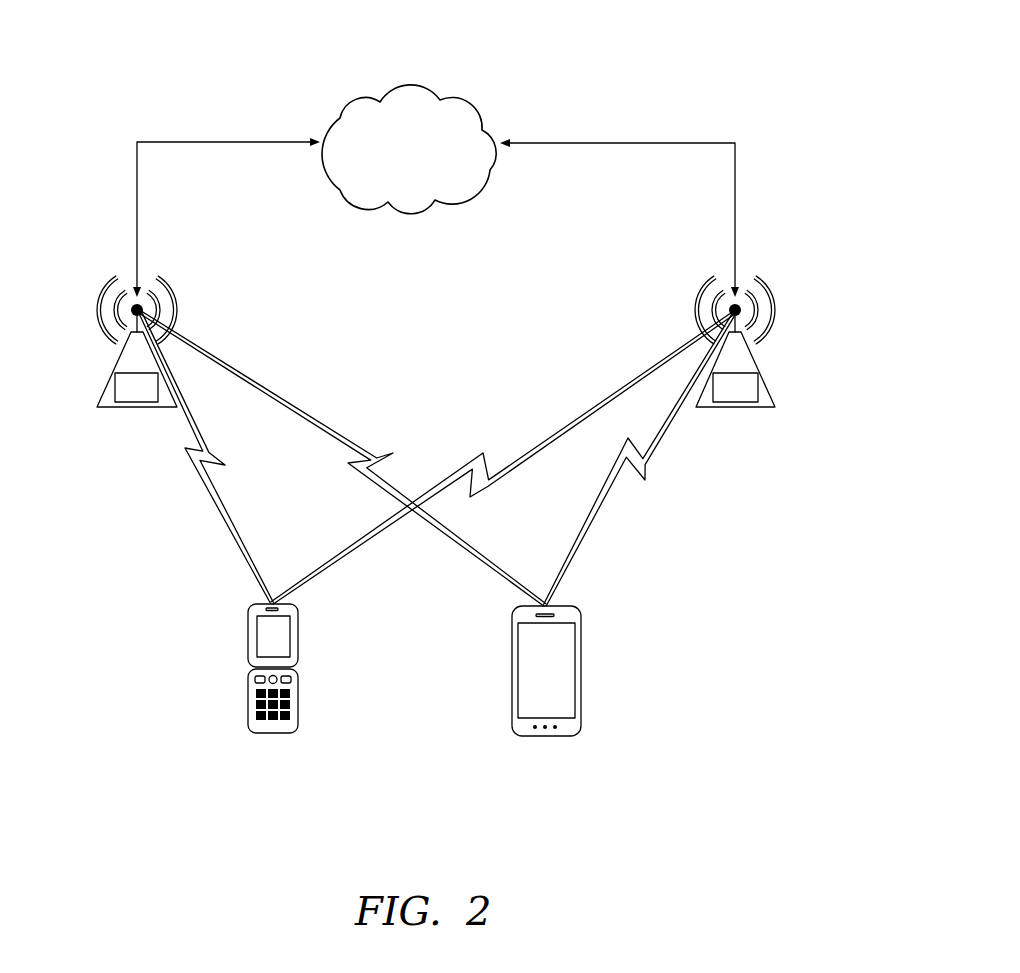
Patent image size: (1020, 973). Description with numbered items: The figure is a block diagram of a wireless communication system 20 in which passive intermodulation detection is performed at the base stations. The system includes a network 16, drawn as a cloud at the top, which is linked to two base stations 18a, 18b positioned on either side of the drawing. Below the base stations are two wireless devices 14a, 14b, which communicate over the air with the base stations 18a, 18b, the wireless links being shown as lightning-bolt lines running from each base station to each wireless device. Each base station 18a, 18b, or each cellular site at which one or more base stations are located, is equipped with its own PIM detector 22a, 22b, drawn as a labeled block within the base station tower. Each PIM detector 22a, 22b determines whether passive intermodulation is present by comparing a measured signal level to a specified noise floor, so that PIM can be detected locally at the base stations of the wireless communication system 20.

The wireless communication system 20 is at (642, 103).
The network 16 is at (418, 212).
The base station 18a is at (118, 362).
The base station 18b is at (757, 364).
The PIM detector 22a is at (148, 403).
The PIM detector 22b is at (745, 403).
The wireless device 14a is at (300, 634).
The wireless device 14b is at (583, 658).